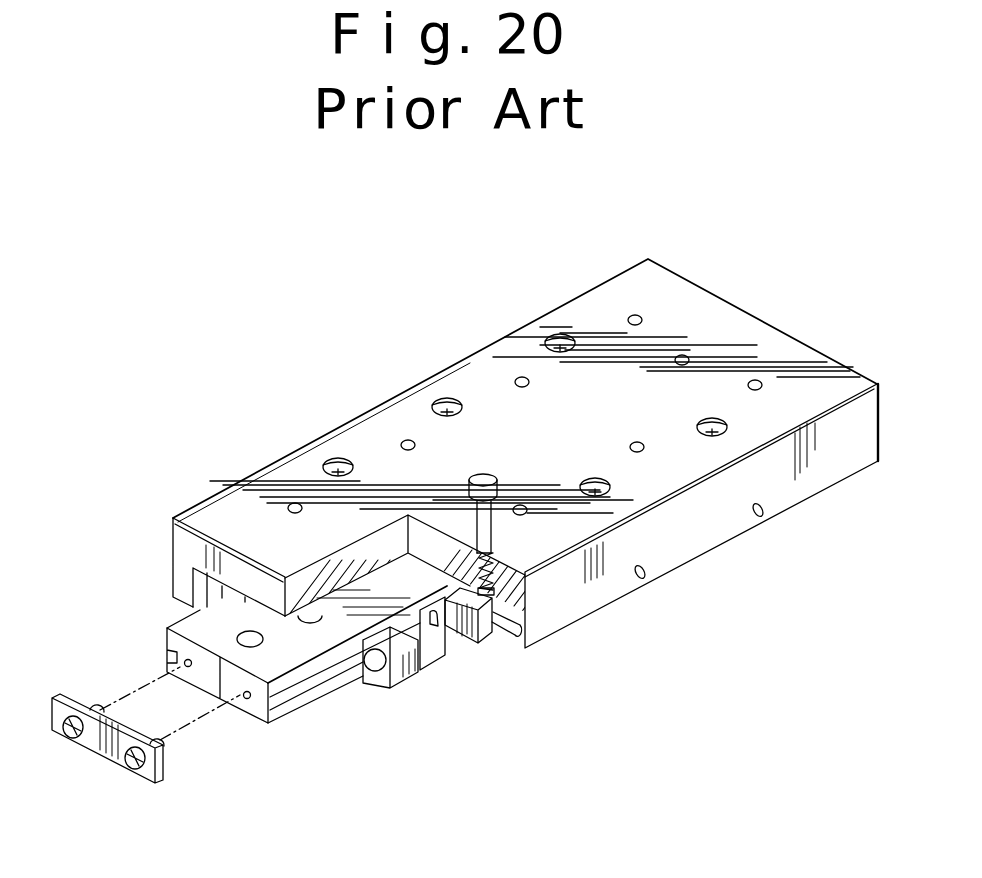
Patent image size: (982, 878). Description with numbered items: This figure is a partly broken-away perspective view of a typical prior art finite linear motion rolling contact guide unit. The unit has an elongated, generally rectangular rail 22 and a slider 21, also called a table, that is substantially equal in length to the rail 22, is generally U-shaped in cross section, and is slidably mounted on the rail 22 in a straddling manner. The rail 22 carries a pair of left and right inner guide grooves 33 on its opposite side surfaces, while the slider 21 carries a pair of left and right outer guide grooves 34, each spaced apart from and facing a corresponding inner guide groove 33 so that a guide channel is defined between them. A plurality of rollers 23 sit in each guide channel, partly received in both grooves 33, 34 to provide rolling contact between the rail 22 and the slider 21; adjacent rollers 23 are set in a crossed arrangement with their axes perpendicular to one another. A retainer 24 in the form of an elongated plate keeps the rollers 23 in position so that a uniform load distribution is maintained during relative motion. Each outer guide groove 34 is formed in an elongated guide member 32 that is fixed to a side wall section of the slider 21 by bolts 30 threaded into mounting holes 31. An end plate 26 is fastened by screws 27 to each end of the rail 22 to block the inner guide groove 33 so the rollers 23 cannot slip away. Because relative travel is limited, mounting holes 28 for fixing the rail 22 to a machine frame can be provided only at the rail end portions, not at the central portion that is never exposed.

The slider 21 is at (486, 405).
The rail 22 is at (198, 626).
The rollers 23 is at (434, 628).
The retainer 24 is at (445, 628).
The end plate 26 is at (88, 744).
The screws 27 is at (140, 768).
The mounting holes 28 is at (257, 646).
The bolts 30 is at (492, 530).
The mounting holes 31 is at (727, 432).
The guide member 32 is at (488, 650).
The inner guide grooves 33 is at (313, 680).
The outer guide grooves 34 is at (500, 634).